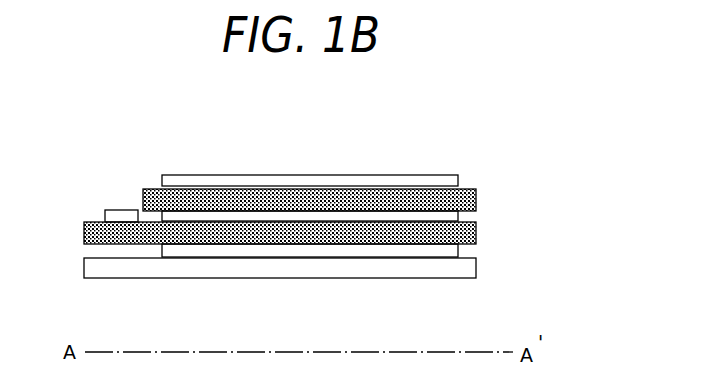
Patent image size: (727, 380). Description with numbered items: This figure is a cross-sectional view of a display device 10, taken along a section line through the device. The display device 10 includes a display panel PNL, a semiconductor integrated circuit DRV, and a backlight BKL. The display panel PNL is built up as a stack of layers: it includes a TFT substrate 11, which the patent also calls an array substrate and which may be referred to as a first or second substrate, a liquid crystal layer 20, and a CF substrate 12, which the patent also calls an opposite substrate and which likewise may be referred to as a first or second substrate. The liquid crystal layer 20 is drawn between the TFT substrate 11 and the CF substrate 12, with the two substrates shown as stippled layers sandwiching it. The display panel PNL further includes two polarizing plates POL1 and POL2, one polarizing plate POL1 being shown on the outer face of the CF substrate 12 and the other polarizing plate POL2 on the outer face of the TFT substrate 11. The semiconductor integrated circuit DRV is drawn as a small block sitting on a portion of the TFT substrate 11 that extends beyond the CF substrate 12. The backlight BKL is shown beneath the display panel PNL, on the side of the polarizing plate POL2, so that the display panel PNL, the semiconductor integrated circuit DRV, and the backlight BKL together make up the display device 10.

The display device 10 is at (356, 130).
The polarizing plate POL1 is at (459, 182).
The CF substrate 12 is at (477, 197).
The liquid crystal layer 20 is at (459, 217).
The TFT substrate 11 is at (315, 232).
The display panel PNL is at (354, 216).
The semiconductor integrated circuit DRV is at (122, 217).
The polarizing plate POL2 is at (459, 248).
The backlight BKL is at (155, 270).